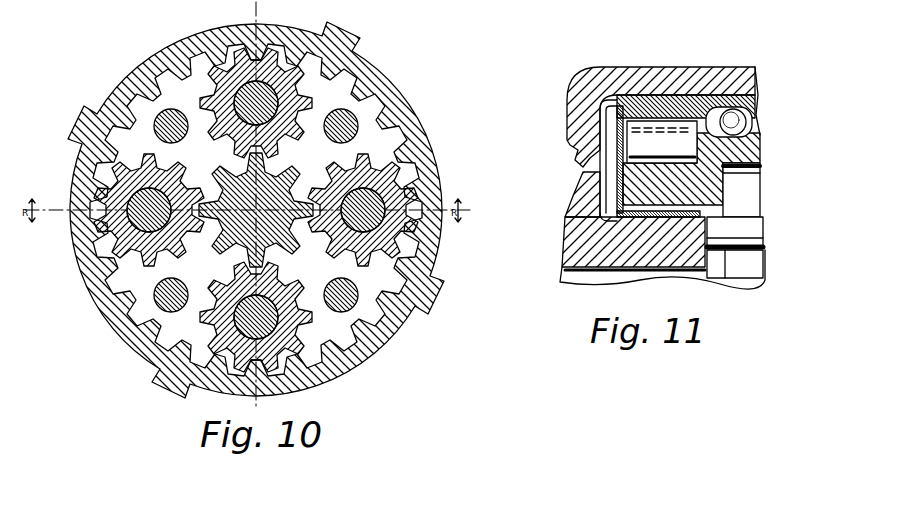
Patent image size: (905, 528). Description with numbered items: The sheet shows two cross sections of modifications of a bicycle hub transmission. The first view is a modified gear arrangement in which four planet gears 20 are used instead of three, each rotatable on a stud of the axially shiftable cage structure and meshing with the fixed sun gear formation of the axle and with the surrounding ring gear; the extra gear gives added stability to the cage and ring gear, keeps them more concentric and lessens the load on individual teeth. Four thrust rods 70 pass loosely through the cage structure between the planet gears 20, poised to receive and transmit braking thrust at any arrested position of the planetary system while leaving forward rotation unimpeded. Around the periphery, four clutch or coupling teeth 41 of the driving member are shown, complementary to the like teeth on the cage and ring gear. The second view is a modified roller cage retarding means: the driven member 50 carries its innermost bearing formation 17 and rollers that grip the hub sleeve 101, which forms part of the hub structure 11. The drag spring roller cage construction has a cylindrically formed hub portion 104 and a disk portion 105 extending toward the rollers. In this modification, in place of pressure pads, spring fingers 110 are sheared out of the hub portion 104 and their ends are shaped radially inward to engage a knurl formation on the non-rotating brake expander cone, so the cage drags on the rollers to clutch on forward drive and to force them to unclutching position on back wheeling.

In FIG. 11, the hub structure 11 is at (567, 97).
In FIG. 11, the innermost bearing formation 17 is at (748, 125).
In FIG. 10, the planet gears 20 is at (104, 233).
In FIG. 10, the clutch or coupling teeth 41 is at (82, 108).
In FIG. 11, the driven member 50 is at (760, 149).
In FIG. 10, the thrust rods 70 is at (155, 132).
In FIG. 11, the hub sleeve 101 is at (630, 100).
In FIG. 11, the hub portion 104 is at (628, 222).
In FIG. 11, the disk portion 105 is at (612, 178).
In FIG. 11, the spring fingers 110 is at (630, 241).